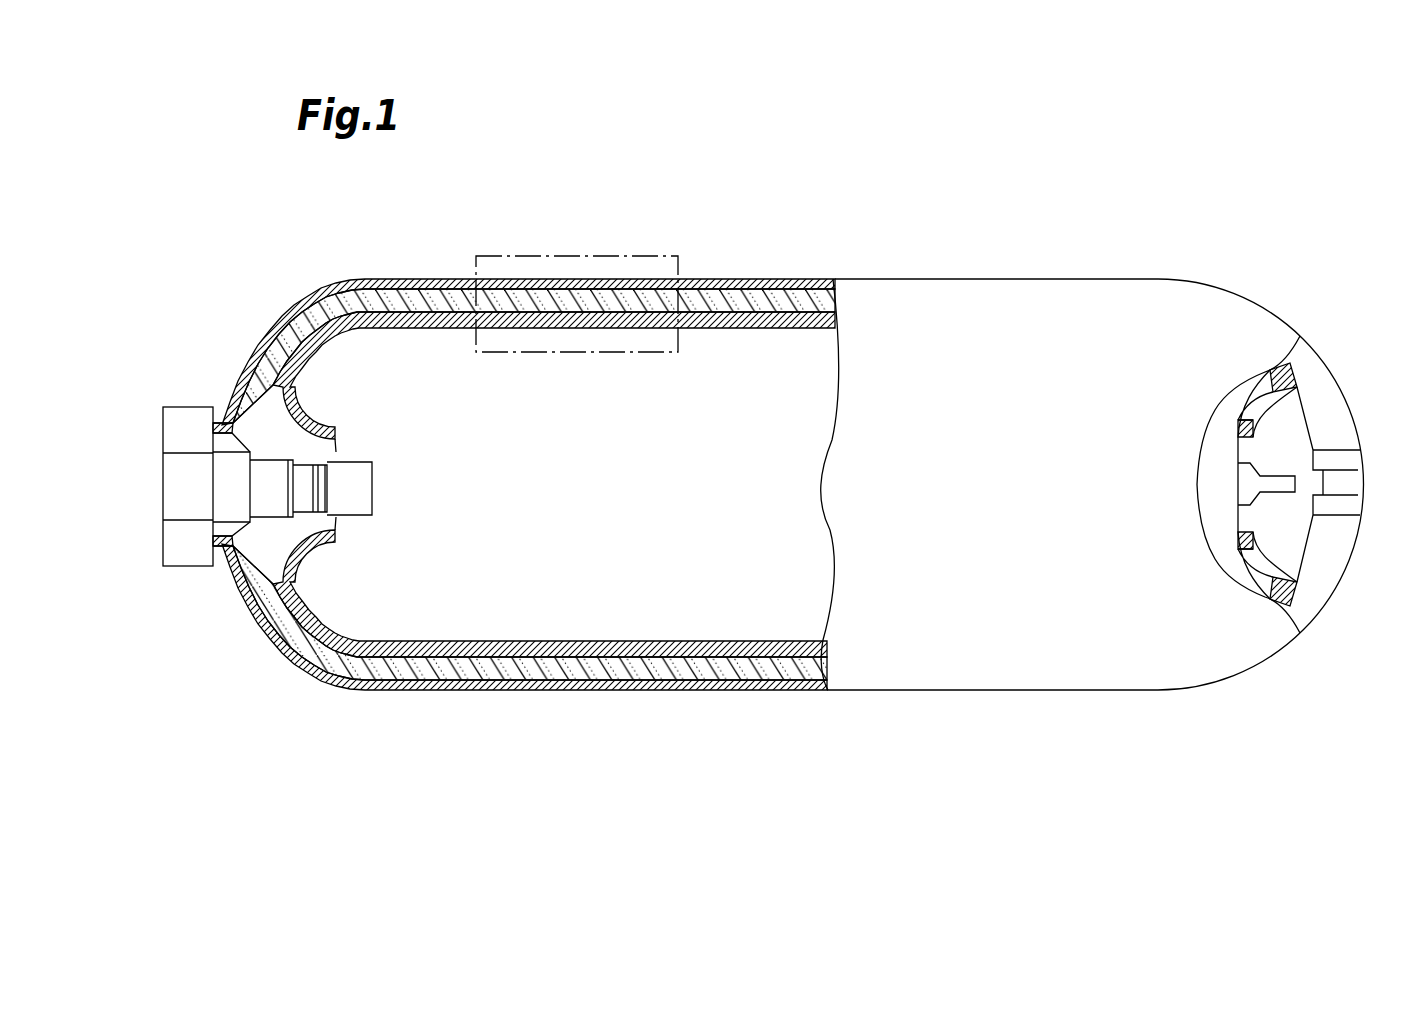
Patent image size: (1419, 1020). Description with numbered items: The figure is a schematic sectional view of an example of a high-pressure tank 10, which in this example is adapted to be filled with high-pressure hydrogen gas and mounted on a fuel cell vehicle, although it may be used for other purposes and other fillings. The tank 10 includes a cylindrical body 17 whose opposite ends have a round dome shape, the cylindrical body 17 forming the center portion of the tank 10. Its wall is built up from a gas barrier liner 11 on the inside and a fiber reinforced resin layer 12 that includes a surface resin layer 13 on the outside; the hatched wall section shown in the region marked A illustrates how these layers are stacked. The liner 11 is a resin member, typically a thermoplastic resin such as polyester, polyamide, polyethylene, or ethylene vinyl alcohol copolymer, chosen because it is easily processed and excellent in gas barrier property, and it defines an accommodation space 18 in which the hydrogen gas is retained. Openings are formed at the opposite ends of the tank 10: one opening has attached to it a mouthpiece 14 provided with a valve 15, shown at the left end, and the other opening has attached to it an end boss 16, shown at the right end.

The high-pressure tank 10 is at (1183, 212).
The gas barrier liner 11 is at (555, 647).
The fiber reinforced resin layer 12 is at (612, 660).
The surface resin layer 13 is at (688, 690).
The mouthpiece 14 is at (281, 433).
The valve 15 is at (186, 553).
The end boss 16 is at (1288, 538).
The cylindrical body 17 is at (1102, 693).
The accommodation space 18 is at (743, 361).
The region A is at (589, 255).